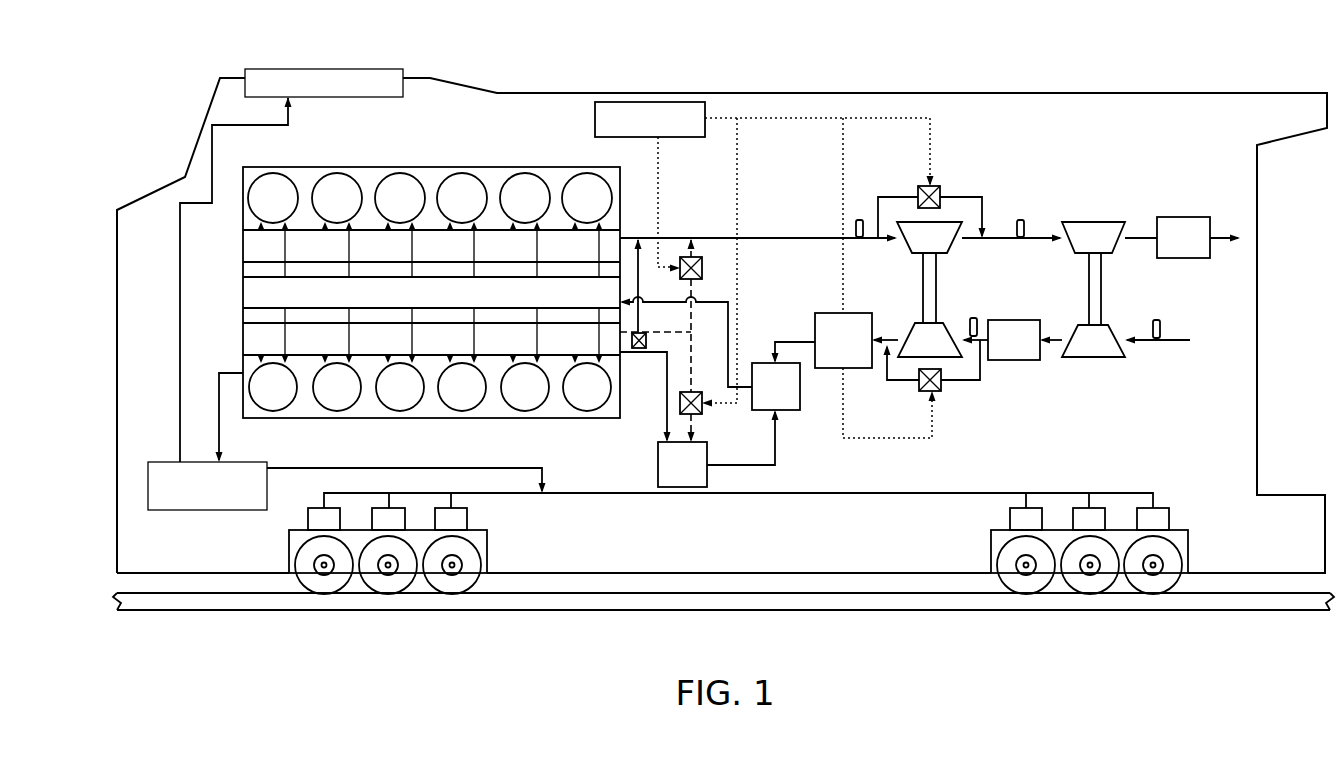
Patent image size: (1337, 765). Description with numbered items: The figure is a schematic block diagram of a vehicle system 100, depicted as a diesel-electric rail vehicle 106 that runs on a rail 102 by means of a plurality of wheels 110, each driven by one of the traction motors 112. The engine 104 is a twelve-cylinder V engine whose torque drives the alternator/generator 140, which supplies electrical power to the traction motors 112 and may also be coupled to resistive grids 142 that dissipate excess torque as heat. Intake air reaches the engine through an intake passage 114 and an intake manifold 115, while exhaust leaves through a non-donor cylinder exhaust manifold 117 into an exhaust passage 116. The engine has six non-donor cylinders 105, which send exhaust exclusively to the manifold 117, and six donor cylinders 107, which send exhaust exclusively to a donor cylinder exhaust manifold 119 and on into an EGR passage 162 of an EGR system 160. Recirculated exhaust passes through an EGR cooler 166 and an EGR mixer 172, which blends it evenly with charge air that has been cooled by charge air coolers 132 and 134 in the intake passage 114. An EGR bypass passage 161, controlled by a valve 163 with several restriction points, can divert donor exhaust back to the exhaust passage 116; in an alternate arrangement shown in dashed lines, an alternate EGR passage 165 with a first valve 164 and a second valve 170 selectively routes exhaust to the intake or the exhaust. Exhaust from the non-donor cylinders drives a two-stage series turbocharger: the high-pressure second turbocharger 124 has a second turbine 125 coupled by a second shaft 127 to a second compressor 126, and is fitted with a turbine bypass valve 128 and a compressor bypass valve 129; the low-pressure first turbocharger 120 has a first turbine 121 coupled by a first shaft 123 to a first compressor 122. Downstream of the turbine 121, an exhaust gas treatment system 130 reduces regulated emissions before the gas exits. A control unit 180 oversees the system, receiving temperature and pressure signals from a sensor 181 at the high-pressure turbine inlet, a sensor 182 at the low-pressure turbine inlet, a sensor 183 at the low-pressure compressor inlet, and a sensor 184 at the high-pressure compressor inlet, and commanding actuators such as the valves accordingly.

The vehicle system 100 is at (722, 303).
The rail 102 is at (1250, 612).
The engine 104 is at (409, 287).
The non-donor cylinders 105 is at (400, 171).
The rail vehicle 106 is at (1022, 93).
The donor cylinders 107 is at (400, 412).
The wheels 110 is at (471, 557).
The traction motors 112 is at (470, 521).
The intake passage 114 is at (1140, 342).
The intake manifold 115 is at (431, 292).
The exhaust passage 116 is at (775, 238).
The non-donor cylinder exhaust manifold 117 is at (240, 248).
The donor cylinder exhaust manifold 119 is at (241, 336).
The first turbocharger 120 is at (1112, 315).
The first turbine 121 is at (1093, 237).
The first compressor 122 is at (1094, 374).
The first shaft 123 is at (1103, 306).
The second turbocharger 124 is at (951, 292).
The second turbine 125 is at (929, 237).
The second compressor 126 is at (943, 340).
The second shaft 127 is at (937, 304).
The turbine bypass valve 128 is at (943, 195).
The compressor bypass valve 129 is at (918, 388).
The exhaust gas treatment system 130 is at (1182, 237).
The charge air cooler 132 is at (1025, 340).
The charge air cooler 134 is at (856, 340).
The alternator/generator 140 is at (347, 441).
The resistive grids 142 is at (392, 67).
The EGR system 160 is at (731, 362).
The EGR bypass passage 161 is at (642, 261).
The EGR passage 162 is at (665, 373).
The valve 163 is at (645, 331).
The first valve 164 is at (703, 268).
The alternate EGR passage 165 is at (695, 333).
The EGR cooler 166 is at (718, 448).
The second valve 170 is at (702, 414).
The EGR mixer 172 is at (717, 353).
The control unit 180 is at (765, 270).
The sensor 181 is at (860, 218).
The sensor 182 is at (1020, 218).
The sensor 183 is at (1157, 318).
The sensor 184 is at (973, 316).